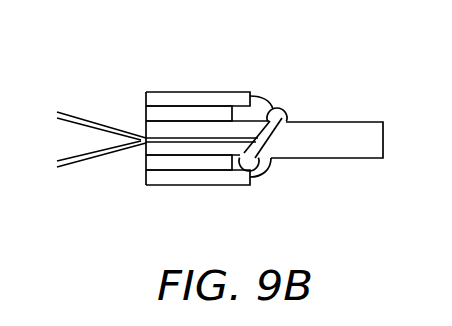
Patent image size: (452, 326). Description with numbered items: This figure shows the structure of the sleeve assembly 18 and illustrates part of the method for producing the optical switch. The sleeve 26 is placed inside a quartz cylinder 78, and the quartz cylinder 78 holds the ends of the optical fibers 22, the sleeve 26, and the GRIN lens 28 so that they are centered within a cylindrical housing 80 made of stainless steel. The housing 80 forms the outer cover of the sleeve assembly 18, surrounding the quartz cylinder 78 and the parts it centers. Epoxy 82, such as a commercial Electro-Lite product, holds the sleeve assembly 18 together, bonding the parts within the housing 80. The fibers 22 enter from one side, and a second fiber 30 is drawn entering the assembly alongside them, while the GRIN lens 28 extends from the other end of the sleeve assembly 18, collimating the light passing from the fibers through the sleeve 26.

The sleeve assembly 18 is at (315, 42).
The optical fibers 22 is at (68, 112).
The second conductor wire 30 is at (72, 167).
The quartz cylinder 78 is at (158, 118).
The cylindrical housing 80 is at (193, 102).
The sleeve 26 is at (200, 152).
The epoxy 82 is at (263, 95).
The GRIN lens 28 is at (348, 150).